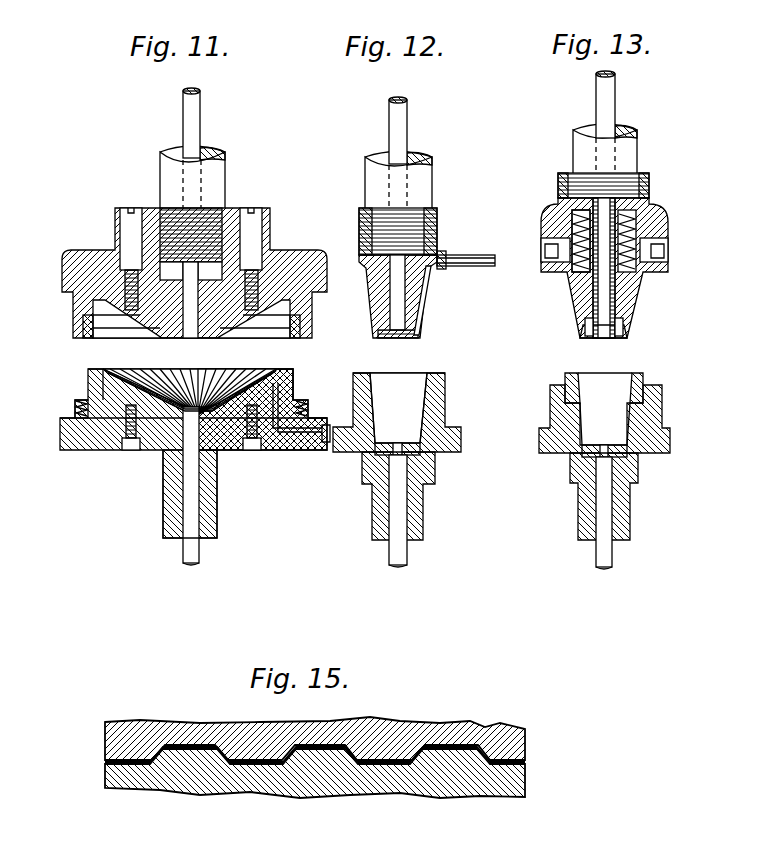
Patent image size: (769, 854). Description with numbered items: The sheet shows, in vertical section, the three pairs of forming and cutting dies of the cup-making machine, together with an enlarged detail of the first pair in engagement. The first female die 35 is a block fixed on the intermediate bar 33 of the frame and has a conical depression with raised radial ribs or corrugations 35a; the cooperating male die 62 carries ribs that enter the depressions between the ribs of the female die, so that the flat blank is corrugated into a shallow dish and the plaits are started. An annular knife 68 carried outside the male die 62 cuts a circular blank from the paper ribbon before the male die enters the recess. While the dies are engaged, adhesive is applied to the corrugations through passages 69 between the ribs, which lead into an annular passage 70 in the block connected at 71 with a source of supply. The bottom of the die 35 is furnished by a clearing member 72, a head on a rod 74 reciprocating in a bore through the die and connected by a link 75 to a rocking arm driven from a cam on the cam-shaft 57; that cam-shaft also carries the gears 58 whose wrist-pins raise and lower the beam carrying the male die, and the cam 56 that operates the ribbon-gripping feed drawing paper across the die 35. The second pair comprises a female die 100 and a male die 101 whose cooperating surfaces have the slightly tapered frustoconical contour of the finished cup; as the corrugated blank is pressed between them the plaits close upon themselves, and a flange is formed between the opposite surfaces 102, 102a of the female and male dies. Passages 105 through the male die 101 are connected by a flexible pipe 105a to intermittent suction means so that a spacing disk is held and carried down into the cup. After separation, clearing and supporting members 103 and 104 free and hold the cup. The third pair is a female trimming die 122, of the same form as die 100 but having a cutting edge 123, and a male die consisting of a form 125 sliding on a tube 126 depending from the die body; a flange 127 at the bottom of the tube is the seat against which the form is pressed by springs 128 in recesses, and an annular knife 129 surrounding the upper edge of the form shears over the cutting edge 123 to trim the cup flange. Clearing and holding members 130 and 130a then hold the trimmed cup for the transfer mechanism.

In FIG. 11, the intermediate bar 33 is at (98, 450).
In FIG. 11, the female die 35 is at (130, 372).
In FIG. 15, the female die 35 is at (525, 775).
In FIG. 11, the ribs or corrugations 35a is at (206, 372).
In FIG. 15, the ribs or corrugations 35a is at (492, 737).
In FIG. 11, the cam 56 is at (100, 375).
In FIG. 11, the cam-shaft 57 is at (88, 384).
In FIG. 11, the gears 58 is at (76, 410).
In FIG. 11, the male die 62 is at (130, 326).
In FIG. 15, the male die 62 is at (428, 740).
In FIG. 11, the annular knife 68 is at (312, 330).
In FIG. 11, the passages 69 is at (275, 372).
In FIG. 11, the annular passage 70 is at (293, 384).
In FIG. 11, the supply connection 71 is at (312, 438).
In FIG. 11, the clearing member 72 is at (170, 452).
In FIG. 11, the rod 74 is at (199, 558).
In FIG. 11, the link 75 is at (200, 130).
In FIG. 12, the female die 100 is at (445, 410).
In FIG. 12, the male die 101 is at (421, 322).
In FIG. 12, the flange-forming surface 102 is at (445, 373).
In FIG. 12, the flange-forming surface 102a is at (430, 272).
In FIG. 12, the clearing and supporting member 103 is at (428, 468).
In FIG. 12, the clearing and supporting member 104 is at (407, 143).
In FIG. 12, the passages 105 is at (446, 252).
In FIG. 12, the flexible pipe 105a is at (470, 258).
In FIG. 13, the female trimming die 122 is at (662, 416).
In FIG. 13, the cutting edge 123 is at (643, 373).
In FIG. 13, the form 125 is at (632, 315).
In FIG. 13, the tube 126 is at (582, 312).
In FIG. 13, the flange 127 is at (588, 330).
In FIG. 13, the springs 128 is at (625, 233).
In FIG. 13, the annular knife 129 is at (648, 268).
In FIG. 13, the clearing and holding member 130 is at (635, 466).
In FIG. 13, the clearing and holding member 130a is at (615, 95).